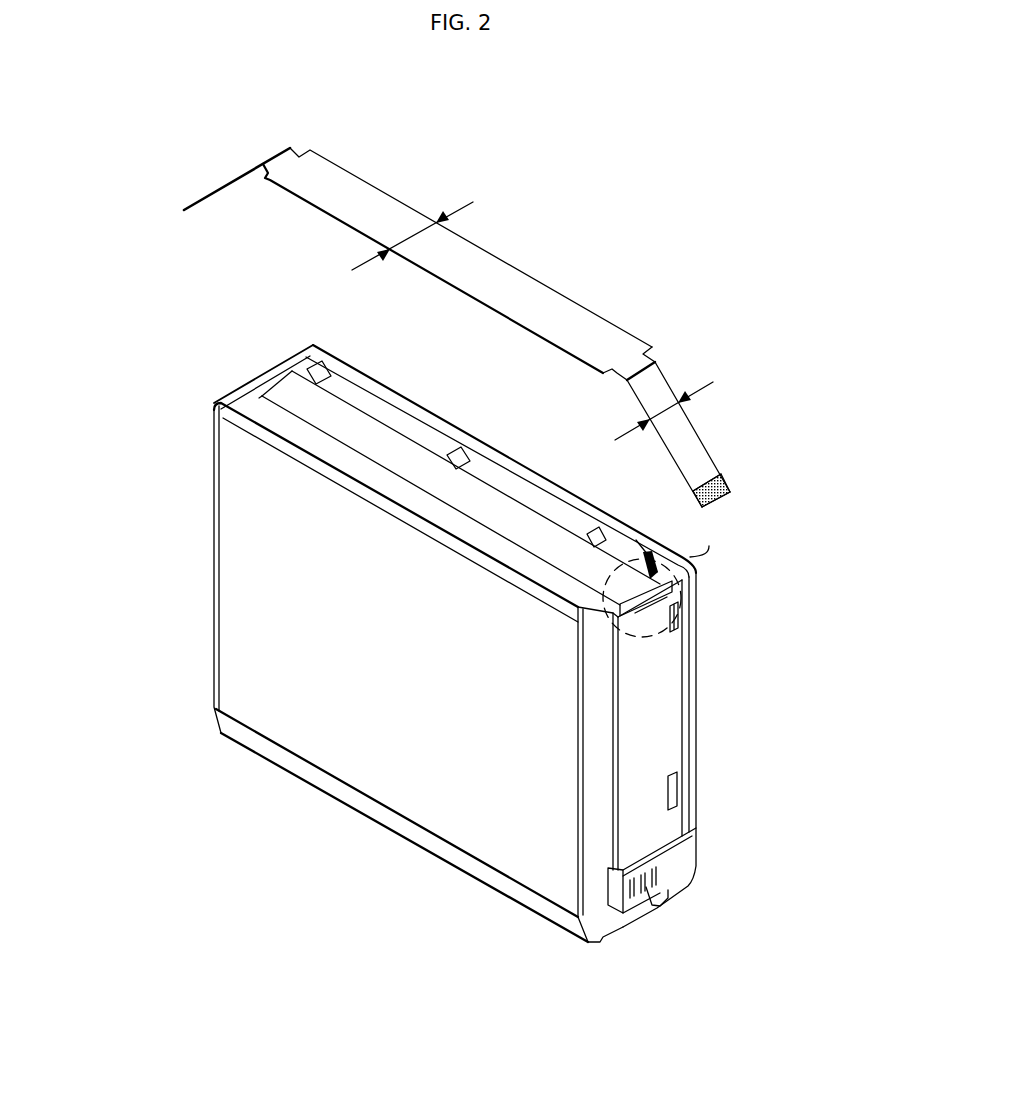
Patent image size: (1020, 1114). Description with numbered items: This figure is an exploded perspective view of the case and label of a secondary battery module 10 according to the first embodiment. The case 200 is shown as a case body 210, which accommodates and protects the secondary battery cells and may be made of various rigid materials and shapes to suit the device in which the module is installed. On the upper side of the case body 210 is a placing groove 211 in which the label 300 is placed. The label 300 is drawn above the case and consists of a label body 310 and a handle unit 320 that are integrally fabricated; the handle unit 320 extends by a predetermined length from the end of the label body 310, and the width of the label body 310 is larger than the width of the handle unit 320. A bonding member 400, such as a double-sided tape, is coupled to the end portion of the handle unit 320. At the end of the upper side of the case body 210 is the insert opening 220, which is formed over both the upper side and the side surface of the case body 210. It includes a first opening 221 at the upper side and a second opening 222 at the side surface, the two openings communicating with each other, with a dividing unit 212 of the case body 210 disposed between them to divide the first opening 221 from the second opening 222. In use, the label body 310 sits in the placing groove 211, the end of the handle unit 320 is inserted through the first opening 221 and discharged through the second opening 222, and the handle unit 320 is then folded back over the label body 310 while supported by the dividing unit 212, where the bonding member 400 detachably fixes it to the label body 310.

The secondary battery module 10 is at (281, 92).
The case 200 is at (166, 445).
The case body 210 is at (238, 490).
The placing groove 211 is at (383, 437).
The dividing unit 212 is at (672, 590).
The insert opening 220 is at (760, 661).
The first opening 221 is at (647, 555).
The second opening 222 is at (676, 625).
The label 300 is at (598, 224).
The label body 310 is at (540, 287).
The handle unit 320 is at (660, 377).
The bonding member 400 is at (728, 490).